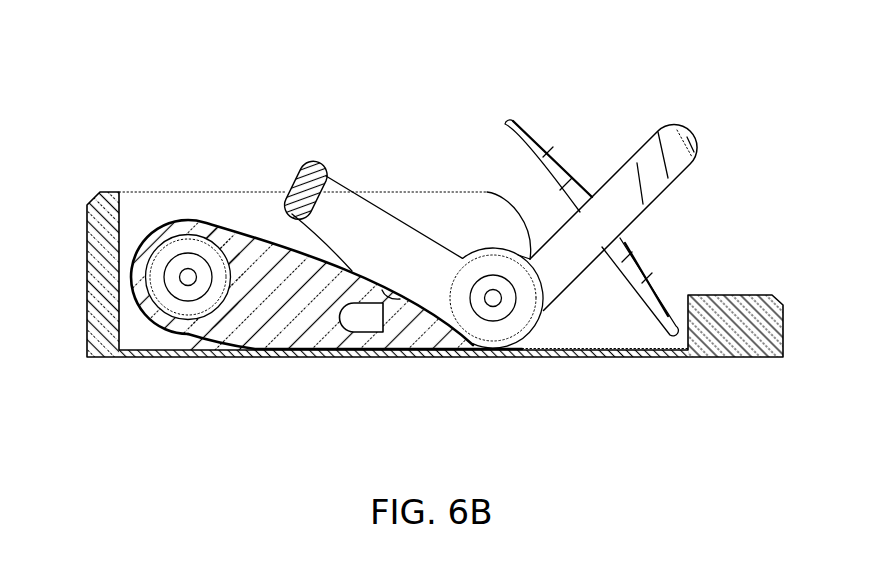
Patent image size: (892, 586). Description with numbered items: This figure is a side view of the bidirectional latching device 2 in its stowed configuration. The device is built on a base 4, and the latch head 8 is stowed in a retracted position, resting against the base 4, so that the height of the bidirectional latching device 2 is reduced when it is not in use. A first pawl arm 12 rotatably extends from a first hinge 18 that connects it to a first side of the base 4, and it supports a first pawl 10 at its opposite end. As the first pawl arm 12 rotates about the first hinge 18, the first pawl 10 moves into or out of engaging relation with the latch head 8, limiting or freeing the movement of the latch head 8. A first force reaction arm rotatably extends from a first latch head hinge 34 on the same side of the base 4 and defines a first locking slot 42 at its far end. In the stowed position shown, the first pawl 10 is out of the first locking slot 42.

The bidirectional latching device 2 is at (445, 80).
The base 4 is at (592, 333).
The latch head 8 is at (508, 135).
The first pawl 10 is at (305, 182).
The first pawl arm 12 is at (343, 240).
The first hinge 18 is at (493, 307).
The first latch head hinge 34 is at (187, 287).
The first locking slot 42 is at (357, 333).